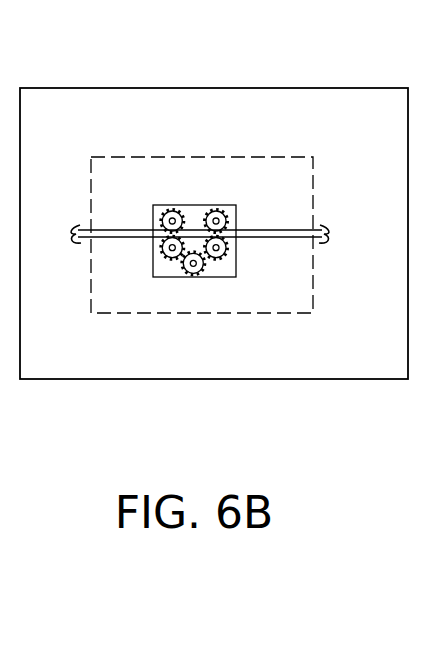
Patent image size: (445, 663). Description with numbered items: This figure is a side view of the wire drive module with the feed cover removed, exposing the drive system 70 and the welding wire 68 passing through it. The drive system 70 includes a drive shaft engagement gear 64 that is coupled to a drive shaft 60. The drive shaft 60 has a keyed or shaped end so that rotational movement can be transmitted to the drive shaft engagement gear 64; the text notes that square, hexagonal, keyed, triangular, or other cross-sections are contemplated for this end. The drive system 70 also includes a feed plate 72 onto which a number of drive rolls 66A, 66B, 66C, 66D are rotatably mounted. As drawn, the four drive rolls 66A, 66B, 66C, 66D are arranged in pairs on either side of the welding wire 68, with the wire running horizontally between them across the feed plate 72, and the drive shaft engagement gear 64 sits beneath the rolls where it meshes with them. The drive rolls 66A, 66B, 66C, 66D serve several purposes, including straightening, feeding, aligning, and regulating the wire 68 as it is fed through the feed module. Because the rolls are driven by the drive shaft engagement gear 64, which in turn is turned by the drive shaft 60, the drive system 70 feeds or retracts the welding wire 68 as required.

The drive shaft 60 is at (187, 272).
The drive shaft engagement gear 64 is at (208, 258).
The drive roll 66A is at (172, 221).
The drive roll 66B is at (162, 252).
The drive roll 66C is at (216, 221).
The drive roll 66D is at (226, 254).
The welding wire 68 is at (313, 228).
The drive system 70 is at (233, 164).
The feed plate 72 is at (193, 210).